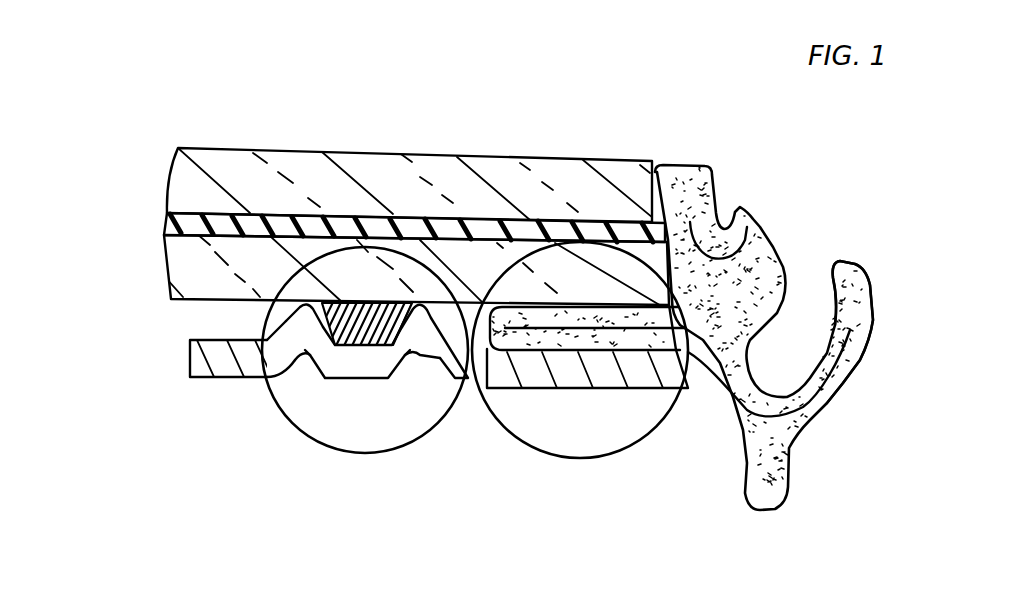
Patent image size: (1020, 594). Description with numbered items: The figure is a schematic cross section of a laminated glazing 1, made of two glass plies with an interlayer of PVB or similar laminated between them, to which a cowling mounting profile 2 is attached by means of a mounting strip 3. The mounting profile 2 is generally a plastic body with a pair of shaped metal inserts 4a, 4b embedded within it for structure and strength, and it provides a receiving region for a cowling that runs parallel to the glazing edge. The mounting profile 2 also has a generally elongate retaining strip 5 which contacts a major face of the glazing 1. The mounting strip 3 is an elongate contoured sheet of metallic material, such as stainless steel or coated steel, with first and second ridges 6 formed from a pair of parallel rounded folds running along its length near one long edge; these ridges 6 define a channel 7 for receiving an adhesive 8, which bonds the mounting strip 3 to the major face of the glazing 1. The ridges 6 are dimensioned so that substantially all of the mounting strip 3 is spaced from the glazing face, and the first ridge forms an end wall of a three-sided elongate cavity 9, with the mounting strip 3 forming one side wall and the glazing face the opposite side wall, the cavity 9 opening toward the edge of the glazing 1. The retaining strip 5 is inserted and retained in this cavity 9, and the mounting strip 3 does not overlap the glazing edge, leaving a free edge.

The laminated glazing 1 is at (415, 112).
The cowling mounting profile 2 is at (762, 246).
The mounting strip 3 is at (203, 378).
The shaped metal insert 4a is at (718, 222).
The shaped metal insert 4b is at (830, 374).
The retaining strip 5 is at (480, 318).
The ridges 6 is at (300, 349).
The channel 7 is at (268, 302).
The adhesive 8 is at (337, 301).
The cavity 9 is at (480, 318).